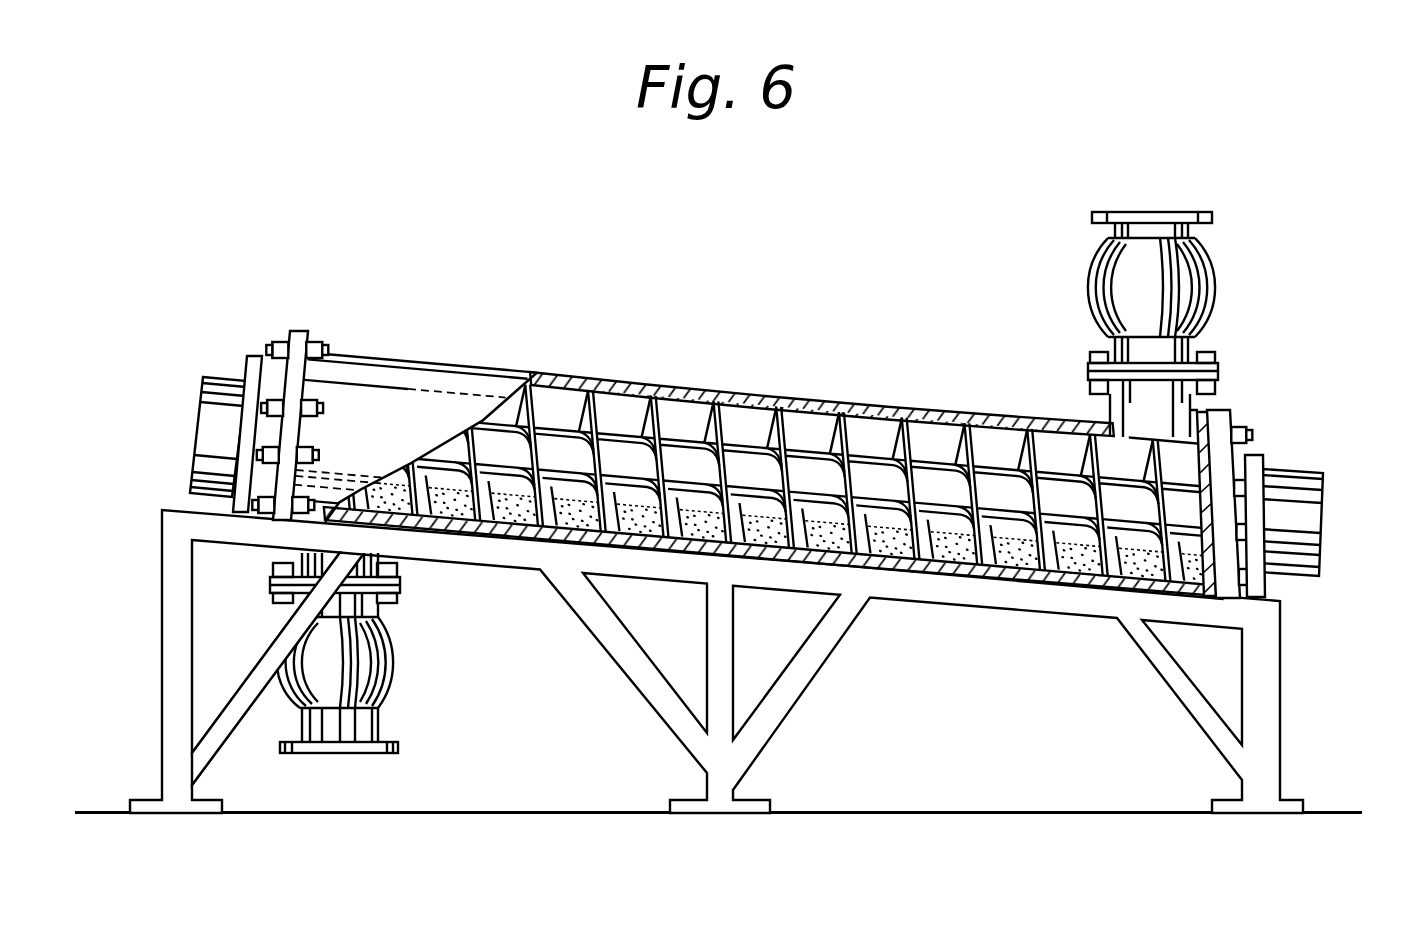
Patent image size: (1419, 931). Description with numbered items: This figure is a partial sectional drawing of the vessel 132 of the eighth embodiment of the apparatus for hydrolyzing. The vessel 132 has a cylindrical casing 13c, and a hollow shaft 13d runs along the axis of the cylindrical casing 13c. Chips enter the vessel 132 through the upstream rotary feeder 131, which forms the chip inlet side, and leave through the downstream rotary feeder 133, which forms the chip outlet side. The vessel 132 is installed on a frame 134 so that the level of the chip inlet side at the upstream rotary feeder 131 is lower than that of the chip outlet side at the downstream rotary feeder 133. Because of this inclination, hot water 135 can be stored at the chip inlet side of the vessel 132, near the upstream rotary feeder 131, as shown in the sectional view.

The vessel 132 is at (755, 355).
The cylindrical casing 13c is at (932, 405).
The hollow shaft 13d is at (1200, 462).
The upstream rotary feeder 131 is at (1213, 282).
The downstream rotary feeder 133 is at (397, 672).
The frame 134 is at (1282, 688).
The hot water 135 is at (1200, 530).